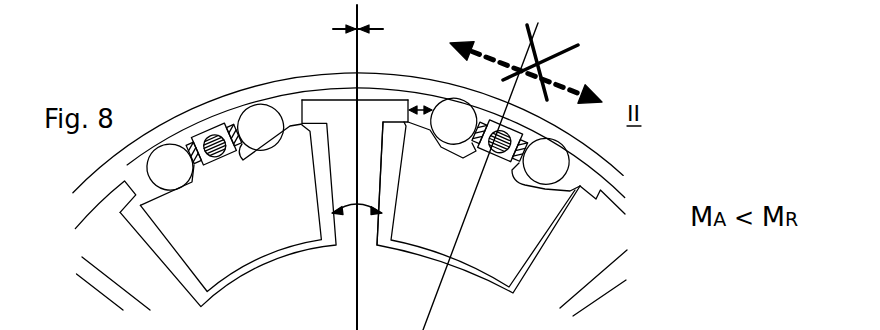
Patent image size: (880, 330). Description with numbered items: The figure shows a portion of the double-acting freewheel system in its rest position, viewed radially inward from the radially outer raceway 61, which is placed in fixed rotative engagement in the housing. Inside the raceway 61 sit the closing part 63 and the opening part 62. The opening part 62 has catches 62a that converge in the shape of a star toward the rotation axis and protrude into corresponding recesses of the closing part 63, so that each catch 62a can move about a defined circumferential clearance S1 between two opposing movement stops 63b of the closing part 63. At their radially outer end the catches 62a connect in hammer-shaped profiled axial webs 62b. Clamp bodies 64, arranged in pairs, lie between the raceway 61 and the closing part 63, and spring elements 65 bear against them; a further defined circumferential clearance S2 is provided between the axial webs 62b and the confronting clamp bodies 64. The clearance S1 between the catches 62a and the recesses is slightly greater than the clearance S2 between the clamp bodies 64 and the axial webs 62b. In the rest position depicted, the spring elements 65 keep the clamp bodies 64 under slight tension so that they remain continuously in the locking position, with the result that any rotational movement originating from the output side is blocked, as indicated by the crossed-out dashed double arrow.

The radially outer raceway 61 is at (286, 78).
The opening part 62 is at (316, 258).
The catch 62a is at (376, 182).
The axial web 62b is at (398, 110).
The closing part 63 is at (244, 252).
The movement stop 63b is at (328, 208).
The clamp body 64 is at (172, 160).
The spring element 65 is at (525, 148).
The circumferential clearance S1 is at (383, 214).
The circumferential clearance S2 is at (415, 114).